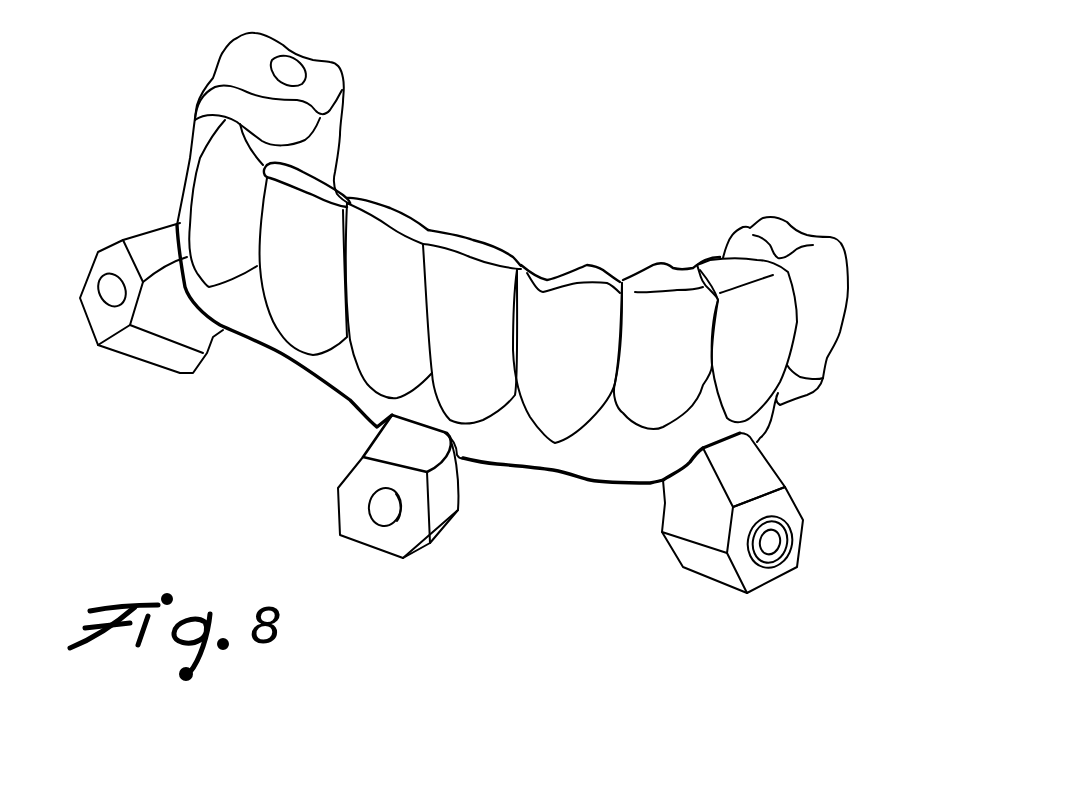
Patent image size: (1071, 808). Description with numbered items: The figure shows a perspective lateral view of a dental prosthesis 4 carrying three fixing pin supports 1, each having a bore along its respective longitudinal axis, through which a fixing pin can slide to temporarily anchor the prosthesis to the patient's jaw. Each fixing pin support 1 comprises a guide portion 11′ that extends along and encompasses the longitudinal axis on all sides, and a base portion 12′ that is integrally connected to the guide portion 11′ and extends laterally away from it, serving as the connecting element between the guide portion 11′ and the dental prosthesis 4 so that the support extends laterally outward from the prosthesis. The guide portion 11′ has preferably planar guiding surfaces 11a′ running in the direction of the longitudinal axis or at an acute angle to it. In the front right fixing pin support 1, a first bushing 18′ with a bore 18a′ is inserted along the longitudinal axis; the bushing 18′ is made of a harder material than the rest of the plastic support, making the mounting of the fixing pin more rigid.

The dental prosthesis 4 is at (528, 180).
The fixing pin support 1 is at (430, 581).
The guide portion 11′ is at (810, 540).
The base portion 12′ is at (753, 473).
The guiding surface 11a′ is at (700, 510).
The first bushing 18′ is at (777, 563).
The bore 18a′ is at (772, 545).